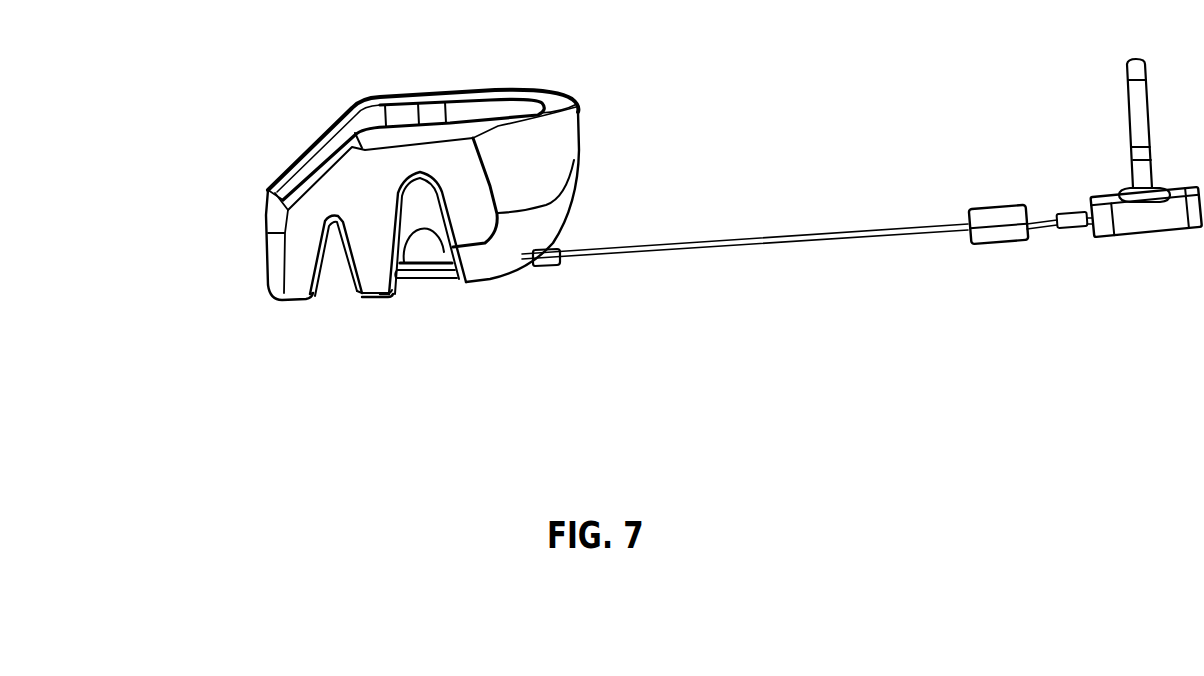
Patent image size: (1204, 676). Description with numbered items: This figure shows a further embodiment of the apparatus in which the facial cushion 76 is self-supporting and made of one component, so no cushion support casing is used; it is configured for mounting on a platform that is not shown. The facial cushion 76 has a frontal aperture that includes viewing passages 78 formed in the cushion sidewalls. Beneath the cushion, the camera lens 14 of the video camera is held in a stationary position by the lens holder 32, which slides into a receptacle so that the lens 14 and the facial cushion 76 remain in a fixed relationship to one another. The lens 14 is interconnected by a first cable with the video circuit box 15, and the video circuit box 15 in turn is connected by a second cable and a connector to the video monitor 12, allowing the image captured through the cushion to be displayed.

The video monitor 12 is at (1127, 62).
The lens 14 is at (423, 272).
The video circuit box 15 is at (1002, 210).
The lens holder 32 is at (543, 265).
The facial cushion 76 is at (563, 150).
The viewing passages 78 is at (350, 272).